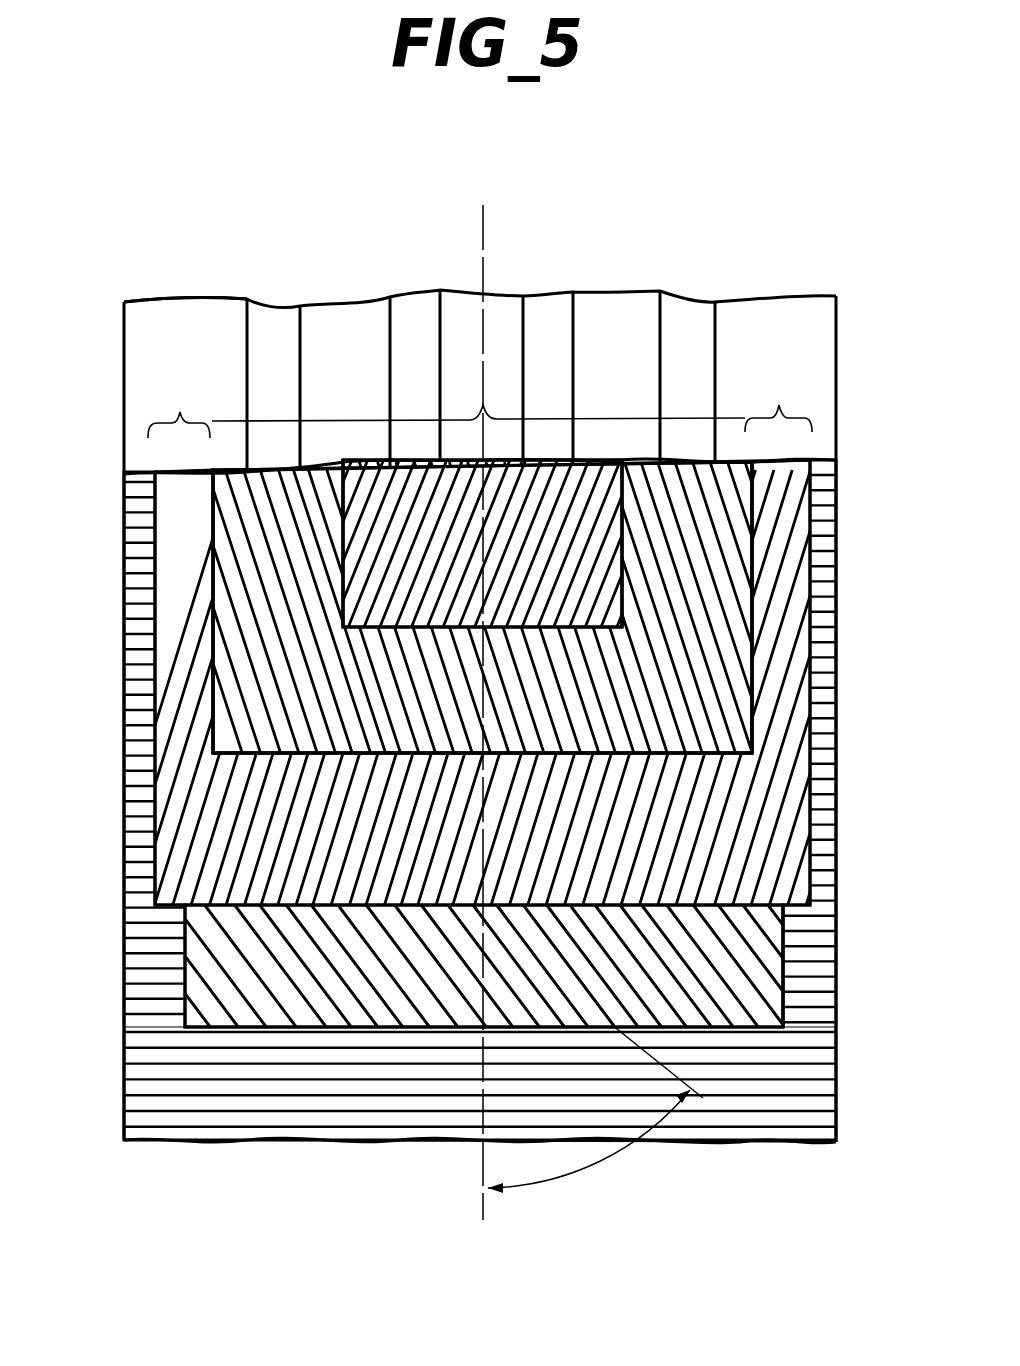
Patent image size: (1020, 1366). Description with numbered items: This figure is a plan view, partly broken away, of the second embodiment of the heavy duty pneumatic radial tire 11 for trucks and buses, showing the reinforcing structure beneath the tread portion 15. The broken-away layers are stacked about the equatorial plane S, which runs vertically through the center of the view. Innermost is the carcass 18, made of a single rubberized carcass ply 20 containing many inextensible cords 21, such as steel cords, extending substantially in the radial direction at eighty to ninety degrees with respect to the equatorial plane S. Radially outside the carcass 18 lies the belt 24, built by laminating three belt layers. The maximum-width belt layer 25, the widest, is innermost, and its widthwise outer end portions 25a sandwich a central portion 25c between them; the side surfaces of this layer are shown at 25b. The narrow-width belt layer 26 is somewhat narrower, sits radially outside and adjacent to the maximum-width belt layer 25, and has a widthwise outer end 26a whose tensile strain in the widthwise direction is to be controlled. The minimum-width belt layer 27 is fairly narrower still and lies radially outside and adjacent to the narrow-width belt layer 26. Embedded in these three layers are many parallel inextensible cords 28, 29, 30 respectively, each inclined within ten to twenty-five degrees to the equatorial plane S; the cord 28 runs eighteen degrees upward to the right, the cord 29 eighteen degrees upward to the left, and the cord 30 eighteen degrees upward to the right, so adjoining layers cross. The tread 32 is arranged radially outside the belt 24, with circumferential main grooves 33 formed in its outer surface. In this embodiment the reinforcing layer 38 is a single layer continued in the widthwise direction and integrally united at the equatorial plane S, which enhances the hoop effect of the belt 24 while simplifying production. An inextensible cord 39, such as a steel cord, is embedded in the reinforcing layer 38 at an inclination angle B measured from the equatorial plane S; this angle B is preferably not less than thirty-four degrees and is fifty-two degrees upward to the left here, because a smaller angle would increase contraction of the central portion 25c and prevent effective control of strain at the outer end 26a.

The heavy duty pneumatic radial tire 11 is at (657, 258).
The tread portion 15 is at (229, 283).
The carcass 18 is at (718, 1152).
The carcass ply 20 is at (790, 1148).
The inextensible cords 21 is at (387, 1080).
The belt 24 is at (645, 442).
The maximum-width belt layer 25 is at (777, 677).
The widthwise outer end portions 25a is at (480, 401).
The side surfaces 25b is at (155, 636).
The central portion 25c is at (478, 396).
The narrow-width belt layer 26 is at (722, 543).
The widthwise outer end 26a is at (212, 512).
The minimum-width belt layer 27 is at (418, 483).
The cord 28 is at (743, 822).
The cord 29 is at (273, 690).
The cord 30 is at (565, 500).
The tread 32 is at (775, 327).
The main grooves 33 is at (420, 312).
The reinforcing layer 38 is at (771, 936).
The inextensible cord 39 is at (745, 962).
The equatorial plane S is at (490, 247).
The inclination angle B is at (595, 1113).